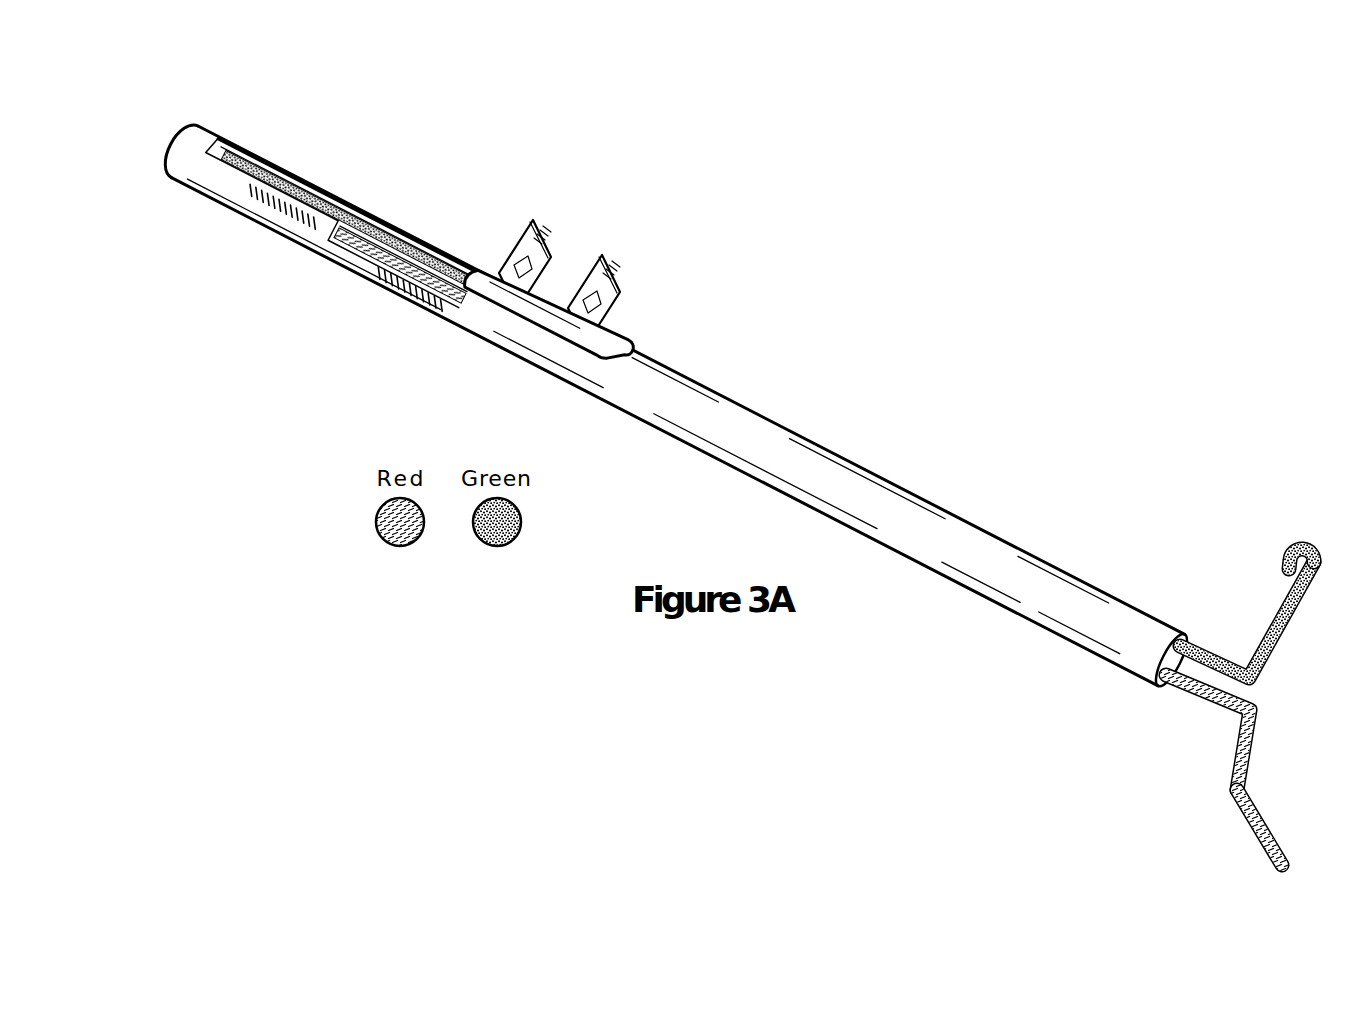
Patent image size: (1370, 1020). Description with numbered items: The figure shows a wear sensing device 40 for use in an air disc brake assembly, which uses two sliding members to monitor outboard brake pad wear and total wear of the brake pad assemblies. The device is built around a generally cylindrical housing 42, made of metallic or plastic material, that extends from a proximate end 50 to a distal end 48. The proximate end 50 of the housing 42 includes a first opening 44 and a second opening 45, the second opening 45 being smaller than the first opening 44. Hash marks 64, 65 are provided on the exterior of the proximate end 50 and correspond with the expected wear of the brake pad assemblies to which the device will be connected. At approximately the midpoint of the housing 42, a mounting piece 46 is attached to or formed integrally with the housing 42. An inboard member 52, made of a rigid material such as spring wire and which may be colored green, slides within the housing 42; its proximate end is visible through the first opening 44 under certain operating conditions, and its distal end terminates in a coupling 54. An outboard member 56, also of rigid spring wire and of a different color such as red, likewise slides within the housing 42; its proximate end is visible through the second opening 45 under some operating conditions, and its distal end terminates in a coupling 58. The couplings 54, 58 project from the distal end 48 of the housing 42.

The wear sensing device 40 is at (776, 183).
The housing 42 is at (785, 430).
The first opening 44 is at (438, 240).
The second opening 45 is at (423, 290).
The mounting piece 46 is at (617, 280).
The distal end 48 is at (1126, 583).
The proximate end 50 is at (247, 125).
The inboard member 52 is at (303, 178).
The coupling 54 is at (1292, 548).
The outboard member 56 is at (352, 257).
The coupling 58 is at (1278, 831).
The hash marks 64 is at (298, 221).
The hash marks 65 is at (440, 318).